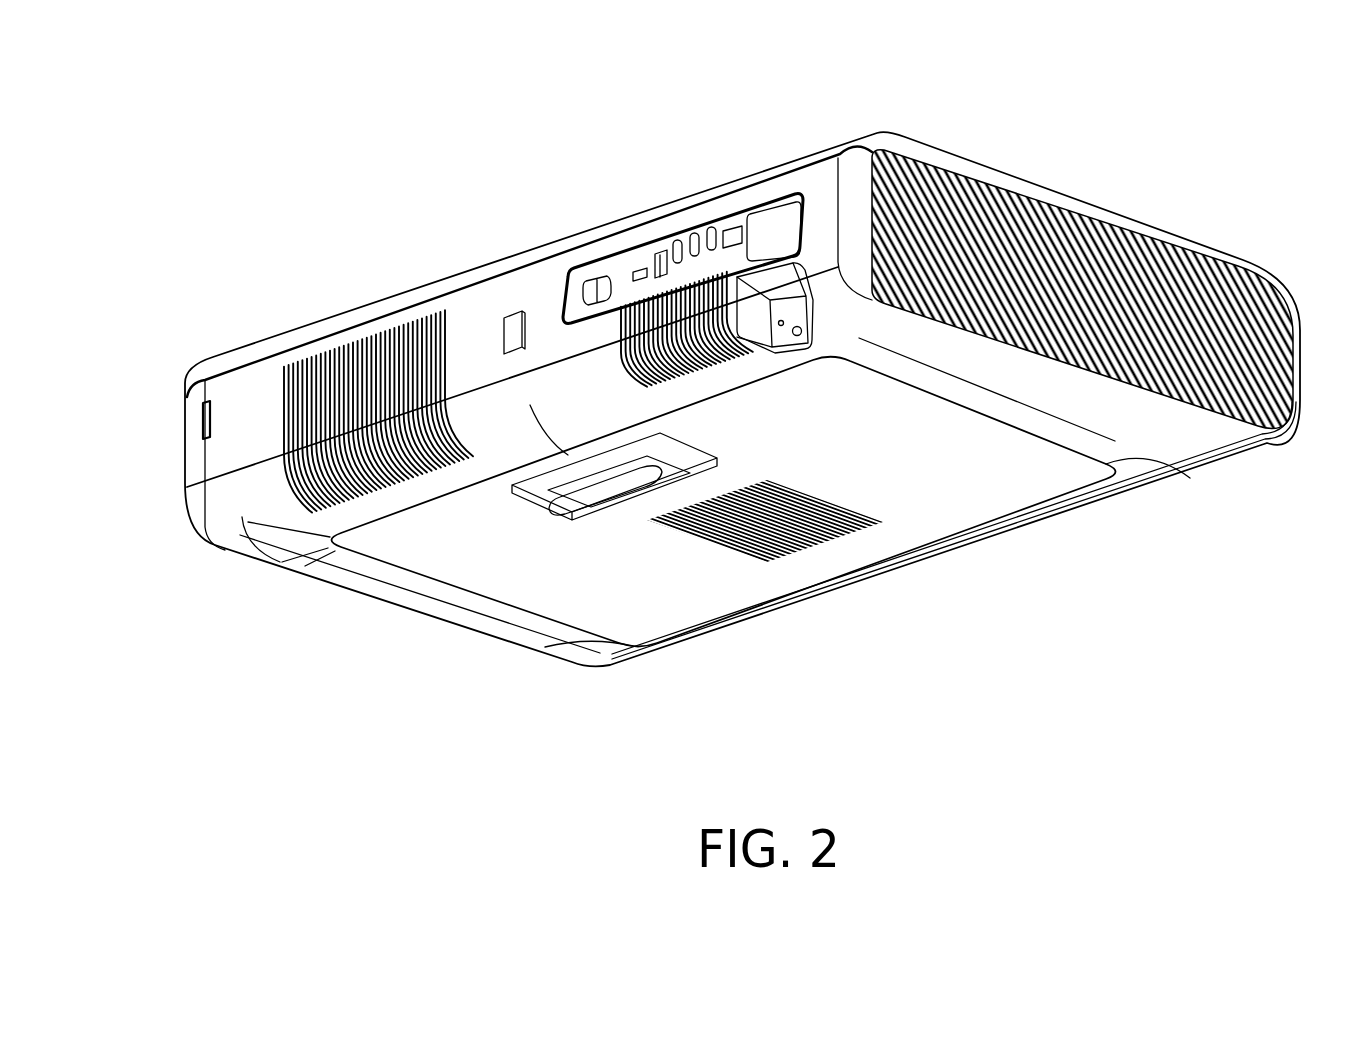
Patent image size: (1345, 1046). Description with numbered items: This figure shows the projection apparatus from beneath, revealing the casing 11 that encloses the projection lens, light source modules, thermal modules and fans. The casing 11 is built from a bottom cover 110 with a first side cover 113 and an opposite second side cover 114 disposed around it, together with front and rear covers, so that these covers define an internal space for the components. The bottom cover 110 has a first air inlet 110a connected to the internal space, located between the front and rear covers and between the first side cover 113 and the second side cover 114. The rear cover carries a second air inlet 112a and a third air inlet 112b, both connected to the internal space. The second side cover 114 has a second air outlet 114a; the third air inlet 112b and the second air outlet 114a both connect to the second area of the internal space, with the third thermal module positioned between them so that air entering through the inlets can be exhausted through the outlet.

The casing 11 is at (742, 399).
The bottom cover 110 is at (672, 597).
The first air inlet 110a is at (883, 498).
The second air inlet 112a is at (263, 435).
The third air inlet 112b is at (605, 368).
The first side cover 113 is at (203, 380).
The second side cover 114 is at (1000, 170).
The second air outlet 114a is at (1164, 428).